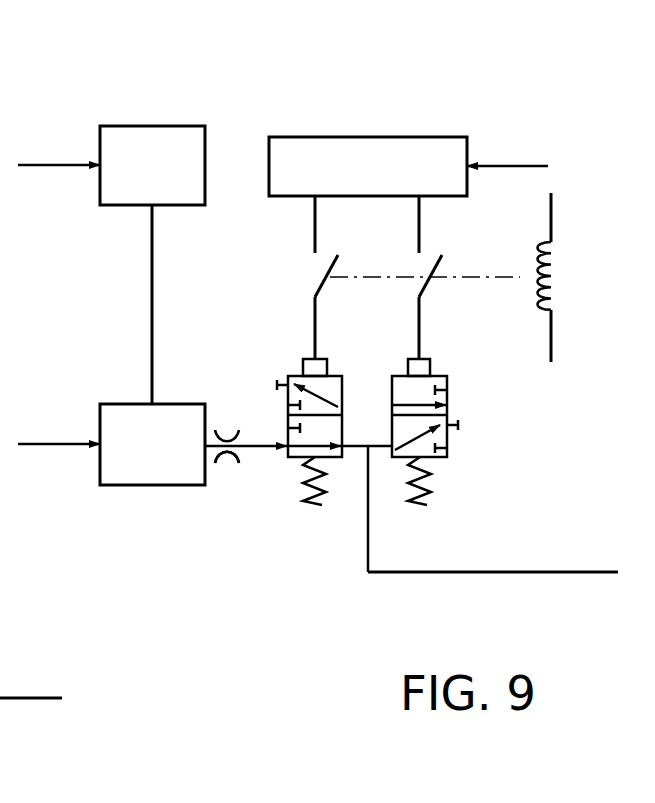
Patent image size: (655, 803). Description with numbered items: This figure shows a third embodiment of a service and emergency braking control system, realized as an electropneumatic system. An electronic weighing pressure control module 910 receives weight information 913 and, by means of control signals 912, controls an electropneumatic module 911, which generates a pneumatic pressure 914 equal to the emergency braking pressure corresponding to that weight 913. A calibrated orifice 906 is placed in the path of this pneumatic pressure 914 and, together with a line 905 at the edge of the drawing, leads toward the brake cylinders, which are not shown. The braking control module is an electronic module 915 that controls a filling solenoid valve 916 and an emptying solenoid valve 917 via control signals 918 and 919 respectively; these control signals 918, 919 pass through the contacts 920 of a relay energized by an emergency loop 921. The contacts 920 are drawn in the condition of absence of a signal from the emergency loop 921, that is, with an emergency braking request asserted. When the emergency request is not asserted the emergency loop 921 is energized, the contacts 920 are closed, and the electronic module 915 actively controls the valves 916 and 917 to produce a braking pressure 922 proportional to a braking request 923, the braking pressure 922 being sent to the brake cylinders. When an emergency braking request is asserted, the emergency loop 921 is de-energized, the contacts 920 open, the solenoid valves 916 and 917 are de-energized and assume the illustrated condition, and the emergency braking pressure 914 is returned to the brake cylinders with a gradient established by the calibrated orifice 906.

The line 905 is at (31, 651).
The calibrated orifice 906 is at (225, 462).
The electronic weighing pressure control module 910 is at (152, 126).
The electropneumatic module 911 is at (172, 485).
The control signals 912 is at (152, 292).
The weight information 913 is at (33, 163).
The pneumatic pressure 914 is at (252, 440).
The electronic module 915 is at (411, 137).
The filling solenoid valve 916 is at (296, 375).
The emptying solenoid valve 917 is at (447, 376).
The control signal 918 is at (316, 335).
The control signal 919 is at (420, 335).
The contacts 920 is at (423, 268).
The emergency loop 921 is at (556, 278).
The braking pressure 922 is at (560, 570).
The braking request 923 is at (528, 164).